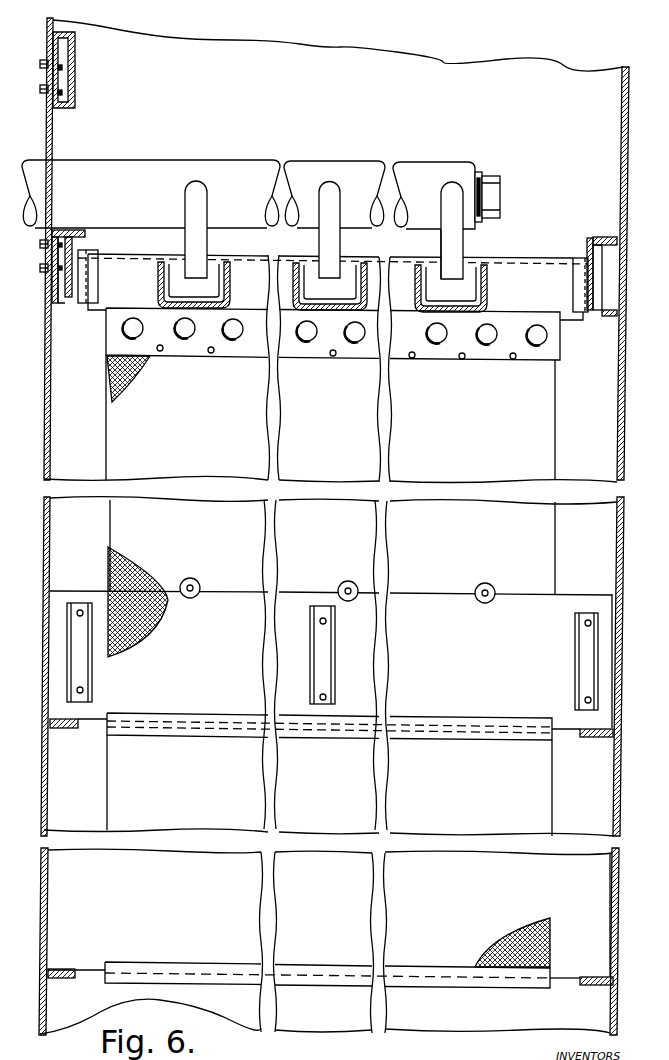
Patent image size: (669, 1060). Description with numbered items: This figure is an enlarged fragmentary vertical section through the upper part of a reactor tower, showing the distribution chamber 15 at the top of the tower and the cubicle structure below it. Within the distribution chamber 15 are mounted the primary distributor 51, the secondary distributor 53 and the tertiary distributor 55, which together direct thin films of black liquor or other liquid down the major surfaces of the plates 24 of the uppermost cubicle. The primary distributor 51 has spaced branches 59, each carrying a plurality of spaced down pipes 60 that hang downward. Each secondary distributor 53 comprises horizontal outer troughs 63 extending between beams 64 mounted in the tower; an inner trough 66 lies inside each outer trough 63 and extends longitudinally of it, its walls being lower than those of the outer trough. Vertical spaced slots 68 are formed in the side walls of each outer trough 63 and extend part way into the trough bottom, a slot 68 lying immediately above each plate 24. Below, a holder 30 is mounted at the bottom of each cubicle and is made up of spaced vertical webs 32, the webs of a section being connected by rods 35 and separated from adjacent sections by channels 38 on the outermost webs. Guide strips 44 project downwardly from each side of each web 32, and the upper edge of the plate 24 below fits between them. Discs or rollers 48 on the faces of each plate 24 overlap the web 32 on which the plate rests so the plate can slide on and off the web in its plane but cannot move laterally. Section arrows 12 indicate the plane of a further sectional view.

The distribution chamber 15 is at (435, 77).
The primary distributor 51 is at (232, 164).
The branches 59 is at (453, 187).
The down pipes 60 is at (455, 246).
The inner trough 66 is at (441, 250).
The secondary distributor 53 is at (493, 265).
The beams 64 is at (546, 270).
The outer trough 63 is at (487, 273).
The slots 68 is at (487, 306).
The tertiary distributor 55 is at (106, 340).
The section line 12 is at (245, 318).
The plates 24 is at (554, 432).
The holder 30 is at (92, 591).
The webs 32 is at (222, 597).
The discs or rollers 48 is at (477, 592).
The channels 38 is at (575, 668).
The rods 35 is at (585, 624).
The guide strips 44 is at (161, 713).